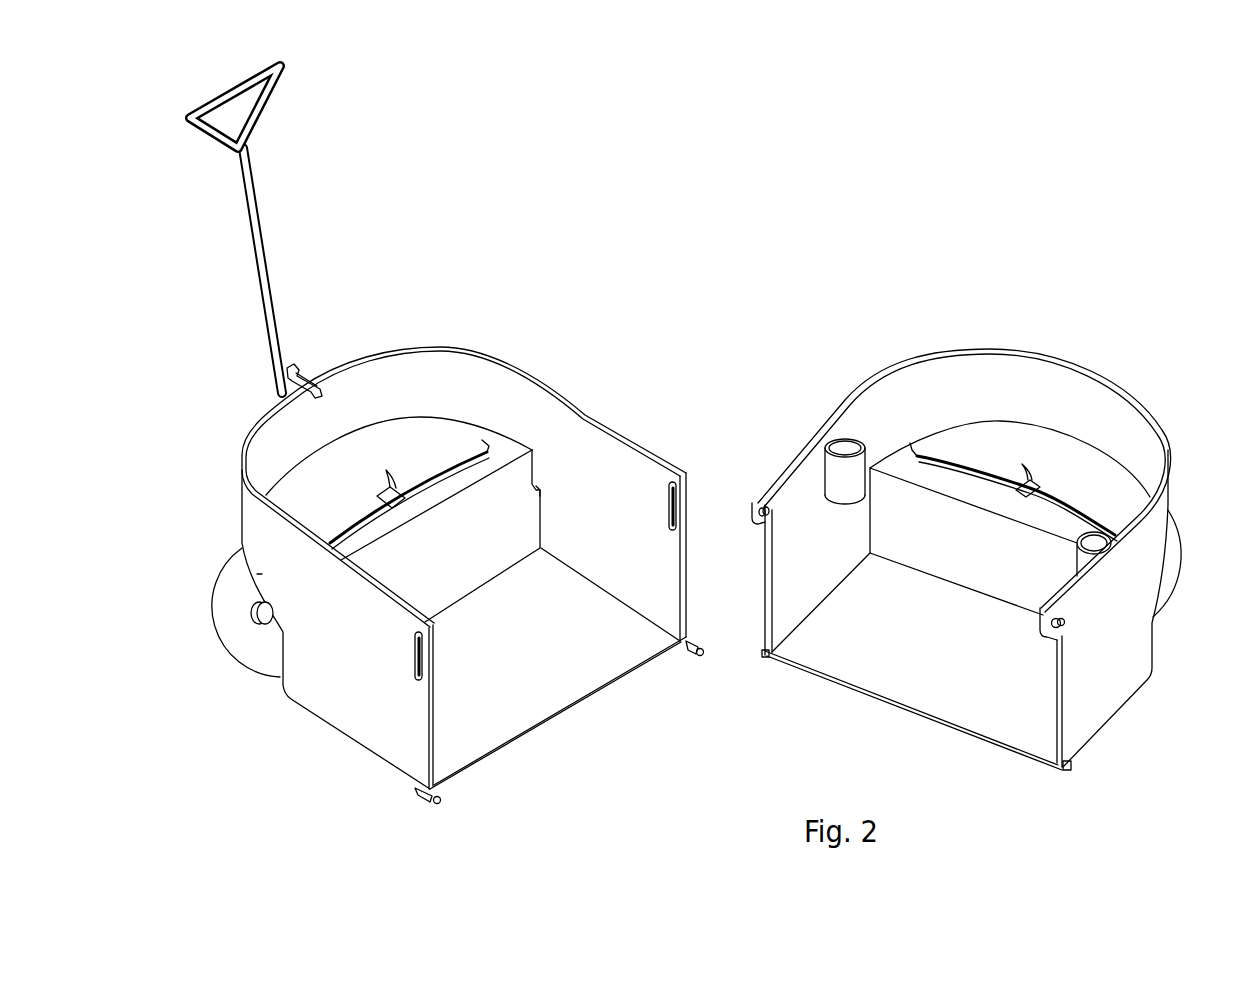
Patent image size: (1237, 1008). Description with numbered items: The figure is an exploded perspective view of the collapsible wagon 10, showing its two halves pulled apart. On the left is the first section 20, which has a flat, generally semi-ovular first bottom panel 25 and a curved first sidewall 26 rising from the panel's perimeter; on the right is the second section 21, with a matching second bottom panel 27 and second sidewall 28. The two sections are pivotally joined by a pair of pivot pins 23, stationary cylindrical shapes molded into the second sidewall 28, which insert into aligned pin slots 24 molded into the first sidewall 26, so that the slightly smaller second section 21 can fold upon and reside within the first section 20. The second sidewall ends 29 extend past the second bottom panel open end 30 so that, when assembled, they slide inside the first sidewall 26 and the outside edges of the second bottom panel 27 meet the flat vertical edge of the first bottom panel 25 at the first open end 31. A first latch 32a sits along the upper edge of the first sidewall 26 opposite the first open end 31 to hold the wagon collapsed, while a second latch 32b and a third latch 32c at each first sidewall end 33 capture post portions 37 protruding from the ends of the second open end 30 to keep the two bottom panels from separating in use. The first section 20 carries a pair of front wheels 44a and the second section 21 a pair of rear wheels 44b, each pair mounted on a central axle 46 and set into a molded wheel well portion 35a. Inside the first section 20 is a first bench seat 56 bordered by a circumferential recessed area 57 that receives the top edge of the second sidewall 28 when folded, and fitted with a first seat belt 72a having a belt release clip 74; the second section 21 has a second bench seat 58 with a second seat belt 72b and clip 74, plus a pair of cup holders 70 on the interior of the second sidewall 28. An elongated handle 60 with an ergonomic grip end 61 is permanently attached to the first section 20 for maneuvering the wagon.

The collapsible wagon 10 is at (1112, 173).
The first section 20 is at (250, 718).
The second section 21 is at (1113, 347).
The pivot pins 23 is at (757, 502).
The pin slots 24 is at (668, 500).
The first bottom panel 25 is at (582, 668).
The first sidewall 26 is at (634, 442).
The second bottom panel 27 is at (820, 665).
The second sidewall 28 is at (820, 432).
The second sidewall ends 29 is at (757, 525).
The second bottom panel open end 30 is at (882, 720).
The first open end 31 is at (646, 682).
The first latch 32a is at (298, 366).
The second latch 32b is at (694, 642).
The third latch 32c is at (442, 797).
The first sidewall end 33 is at (687, 530).
The wheel well portion 35a is at (257, 578).
The post portions 37 is at (764, 653).
The front wheels 44a is at (246, 649).
The rear wheels 44b is at (1178, 548).
The central axle 46 is at (255, 617).
The first bench seat 56 is at (433, 503).
The circumferential recessed area 57 is at (545, 490).
The second bench seat 58 is at (950, 490).
The handle 60 is at (258, 186).
The grip end 61 is at (197, 132).
The cup holders 70 is at (840, 460).
The first seat belt 72a is at (424, 481).
The second seat belt 72b is at (980, 466).
The belt release clip 74 is at (380, 494).